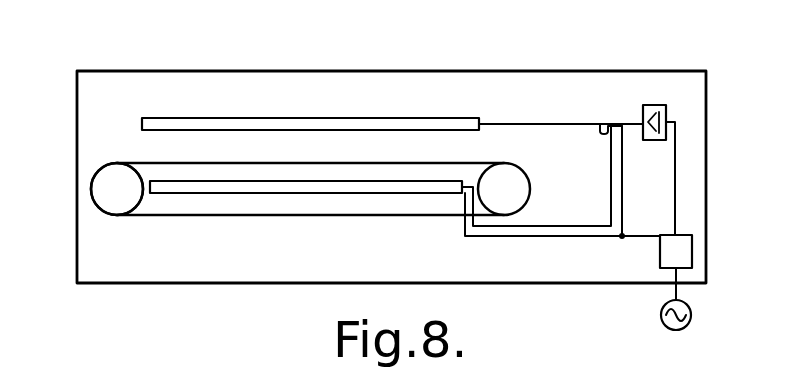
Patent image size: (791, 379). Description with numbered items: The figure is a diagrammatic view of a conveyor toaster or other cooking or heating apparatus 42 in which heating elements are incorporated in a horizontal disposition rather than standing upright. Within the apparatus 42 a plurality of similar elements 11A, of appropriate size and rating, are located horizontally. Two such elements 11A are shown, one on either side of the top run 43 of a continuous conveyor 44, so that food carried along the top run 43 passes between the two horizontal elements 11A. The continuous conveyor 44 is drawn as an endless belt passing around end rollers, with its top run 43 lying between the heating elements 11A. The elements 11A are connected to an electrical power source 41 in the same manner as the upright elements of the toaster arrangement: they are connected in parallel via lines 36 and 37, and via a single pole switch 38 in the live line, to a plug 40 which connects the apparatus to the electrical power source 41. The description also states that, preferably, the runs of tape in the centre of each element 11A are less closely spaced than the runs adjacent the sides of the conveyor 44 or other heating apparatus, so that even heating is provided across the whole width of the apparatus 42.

The conveyor toaster or other cooking or heating apparatus 42 is at (76, 92).
The elements 11A is at (325, 117).
The top run 43 is at (418, 162).
The continuous conveyor 44 is at (106, 191).
The line 36 is at (572, 123).
The line 37 is at (537, 237).
The single pole switch 38 is at (660, 105).
The plug 40 is at (684, 252).
The electrical power source 41 is at (661, 318).